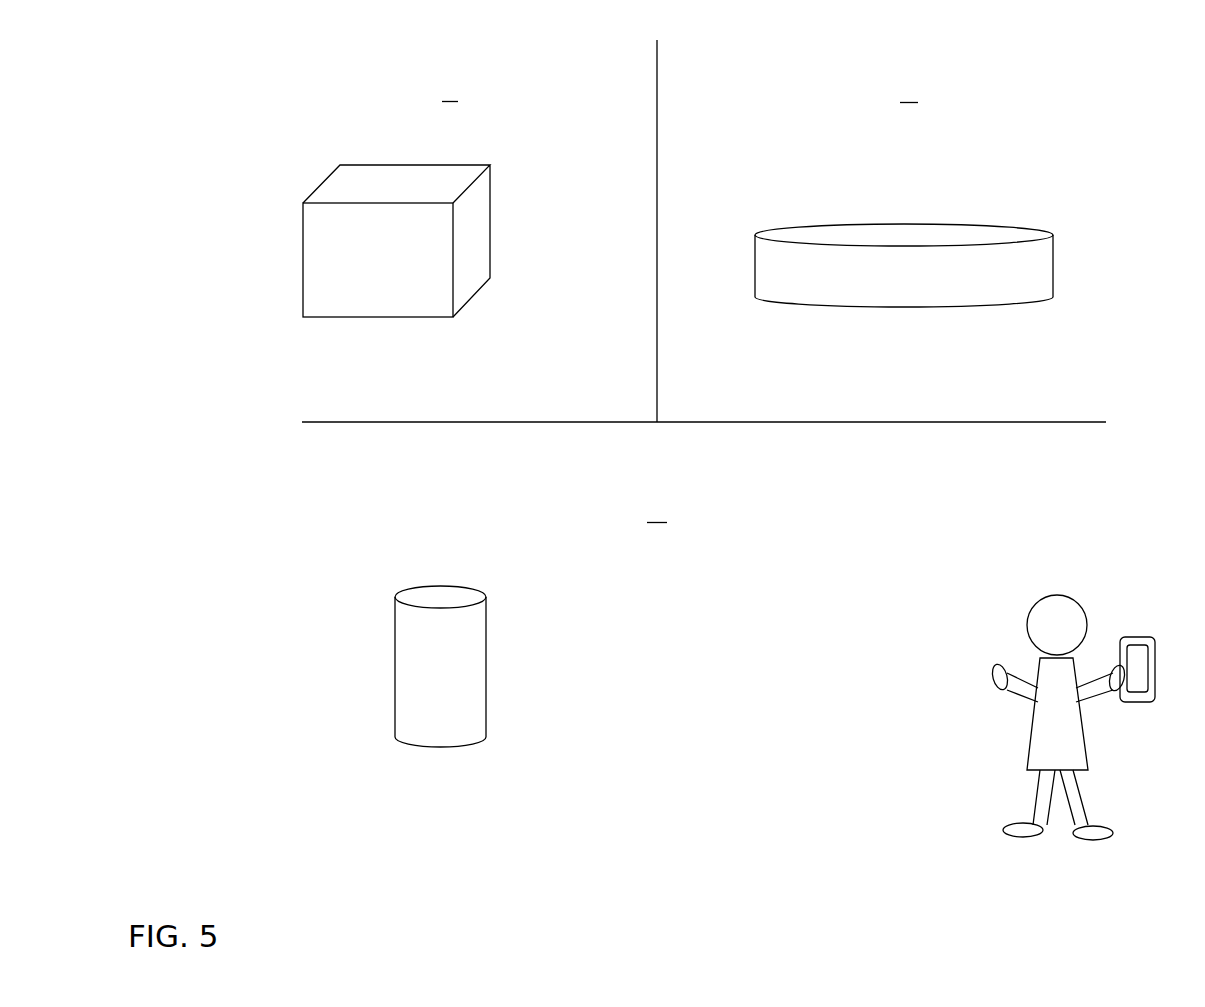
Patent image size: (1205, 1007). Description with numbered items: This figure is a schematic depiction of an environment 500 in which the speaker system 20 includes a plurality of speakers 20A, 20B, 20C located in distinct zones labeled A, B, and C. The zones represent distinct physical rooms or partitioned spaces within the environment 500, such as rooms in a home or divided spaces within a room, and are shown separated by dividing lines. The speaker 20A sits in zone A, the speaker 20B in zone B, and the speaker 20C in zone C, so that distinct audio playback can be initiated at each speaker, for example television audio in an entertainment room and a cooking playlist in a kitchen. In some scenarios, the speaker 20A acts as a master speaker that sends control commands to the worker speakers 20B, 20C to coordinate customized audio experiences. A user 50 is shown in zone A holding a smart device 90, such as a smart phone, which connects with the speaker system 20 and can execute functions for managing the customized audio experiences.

The environment 500 is at (173, 125).
The speaker system 20 is at (658, 386).
The speaker 20A is at (417, 684).
The speaker 20B is at (357, 274).
The speaker 20C is at (882, 282).
The user 50 is at (1000, 767).
The smart device 90 is at (1132, 627).